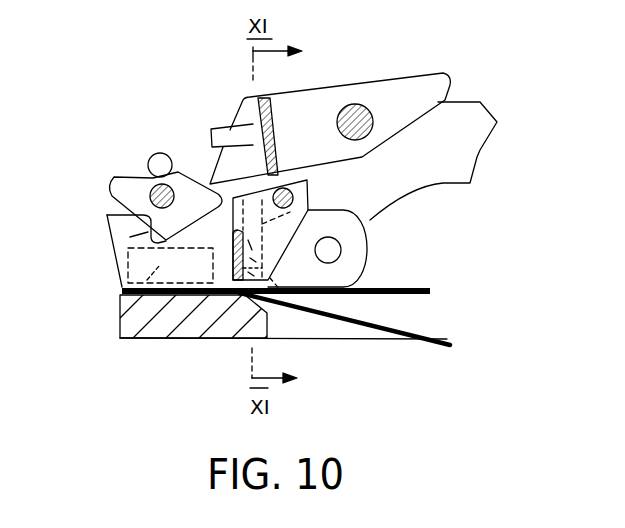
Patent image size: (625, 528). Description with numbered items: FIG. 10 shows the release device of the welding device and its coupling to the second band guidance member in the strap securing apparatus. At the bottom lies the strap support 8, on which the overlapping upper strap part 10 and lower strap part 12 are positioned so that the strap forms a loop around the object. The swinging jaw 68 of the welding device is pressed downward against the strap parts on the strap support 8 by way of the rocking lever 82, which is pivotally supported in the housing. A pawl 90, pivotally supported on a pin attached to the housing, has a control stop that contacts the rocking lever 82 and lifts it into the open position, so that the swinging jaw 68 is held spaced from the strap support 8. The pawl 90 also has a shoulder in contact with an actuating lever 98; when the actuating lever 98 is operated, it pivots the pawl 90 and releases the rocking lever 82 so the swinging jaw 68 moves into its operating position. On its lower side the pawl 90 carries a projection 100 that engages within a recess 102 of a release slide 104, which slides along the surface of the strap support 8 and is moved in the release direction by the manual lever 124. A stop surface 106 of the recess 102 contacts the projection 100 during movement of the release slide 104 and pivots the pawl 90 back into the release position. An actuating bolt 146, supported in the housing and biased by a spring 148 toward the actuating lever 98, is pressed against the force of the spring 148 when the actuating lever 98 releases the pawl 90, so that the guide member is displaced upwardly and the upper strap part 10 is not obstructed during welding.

The strap support 8 is at (238, 318).
The upper strap part 10 is at (403, 293).
The lower strap part 12 is at (405, 328).
The swinging jaw 68 is at (122, 297).
The rocking lever 82 is at (167, 140).
The pawl 90 is at (131, 170).
The actuating lever 98 is at (393, 97).
The projection 100 is at (138, 210).
The recess 102 is at (130, 237).
The release slide 104 is at (348, 264).
The stop surface 106 is at (113, 236).
The manual lever 124 is at (443, 163).
The actuating bolt 146 is at (307, 203).
The spring 148 is at (262, 298).